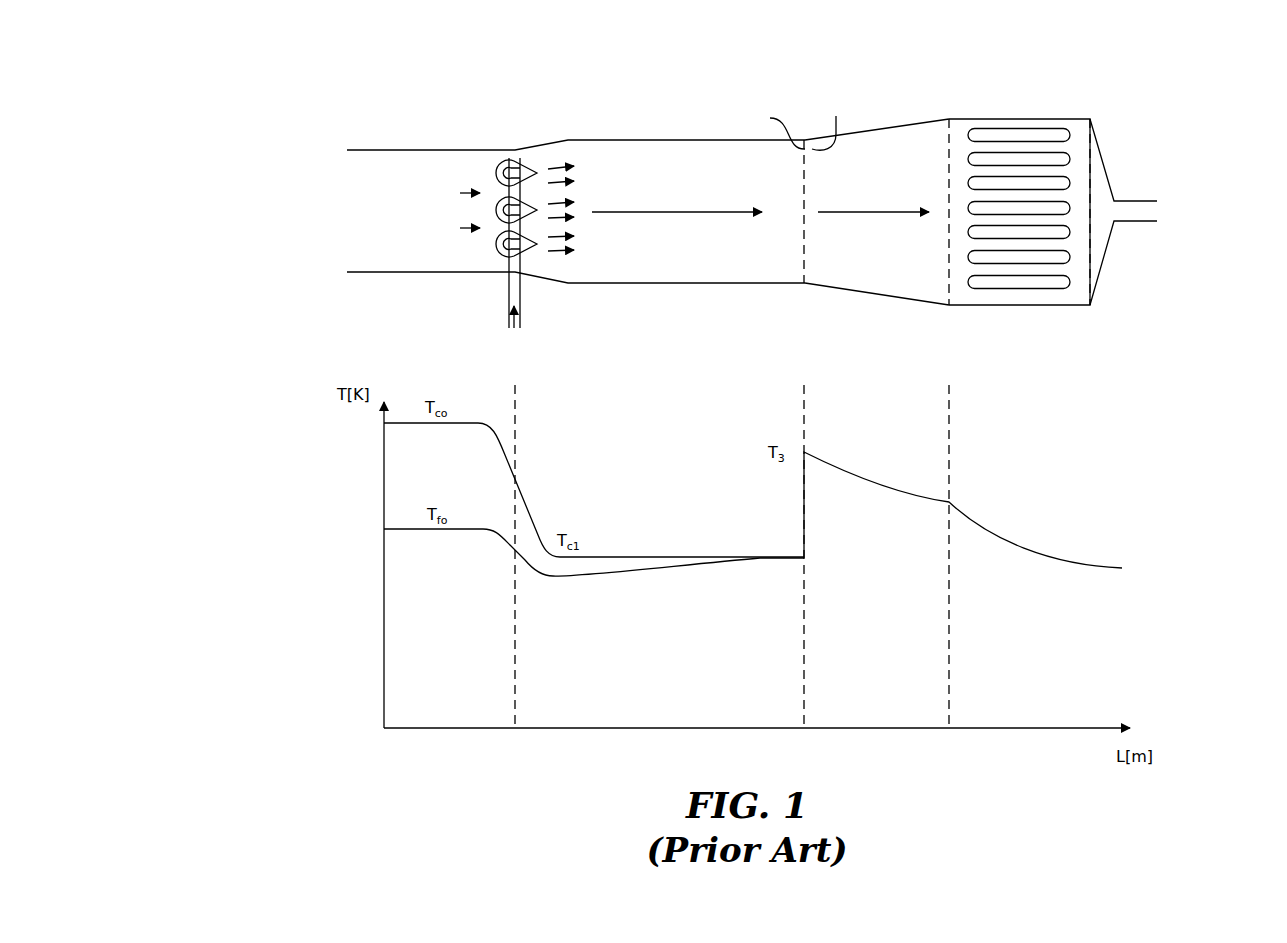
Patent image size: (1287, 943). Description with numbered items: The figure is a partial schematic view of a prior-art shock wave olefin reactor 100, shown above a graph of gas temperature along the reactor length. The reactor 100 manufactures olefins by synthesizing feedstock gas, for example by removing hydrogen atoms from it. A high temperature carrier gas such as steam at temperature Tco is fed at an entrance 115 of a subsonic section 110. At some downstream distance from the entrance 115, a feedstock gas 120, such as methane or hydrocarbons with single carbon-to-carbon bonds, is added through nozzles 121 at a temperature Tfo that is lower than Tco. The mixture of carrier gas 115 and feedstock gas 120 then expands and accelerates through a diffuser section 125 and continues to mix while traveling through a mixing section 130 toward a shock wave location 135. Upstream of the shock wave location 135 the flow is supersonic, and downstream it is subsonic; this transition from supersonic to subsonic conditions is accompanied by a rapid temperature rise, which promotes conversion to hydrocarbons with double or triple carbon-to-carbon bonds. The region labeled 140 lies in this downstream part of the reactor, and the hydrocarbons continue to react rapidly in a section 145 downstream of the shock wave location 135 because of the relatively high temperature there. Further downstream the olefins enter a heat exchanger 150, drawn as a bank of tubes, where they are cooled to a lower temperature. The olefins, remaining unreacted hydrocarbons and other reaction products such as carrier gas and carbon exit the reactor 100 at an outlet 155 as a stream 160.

The shock wave olefin reactor 100 is at (280, 118).
The subsonic section 110 is at (438, 134).
The entrance 115 is at (347, 220).
The feedstock gas 120 is at (533, 300).
The nozzles 121 is at (534, 158).
The diffuser section 125 is at (533, 145).
The mixing section 130 is at (717, 260).
The shock wave location 135 is at (805, 263).
The diffuser section 140 is at (884, 110).
The section downstream of the shock wave location 145 is at (912, 148).
The heat exchanger 150 is at (1054, 292).
The outlet 155 is at (1138, 200).
The stream 160 is at (1162, 207).